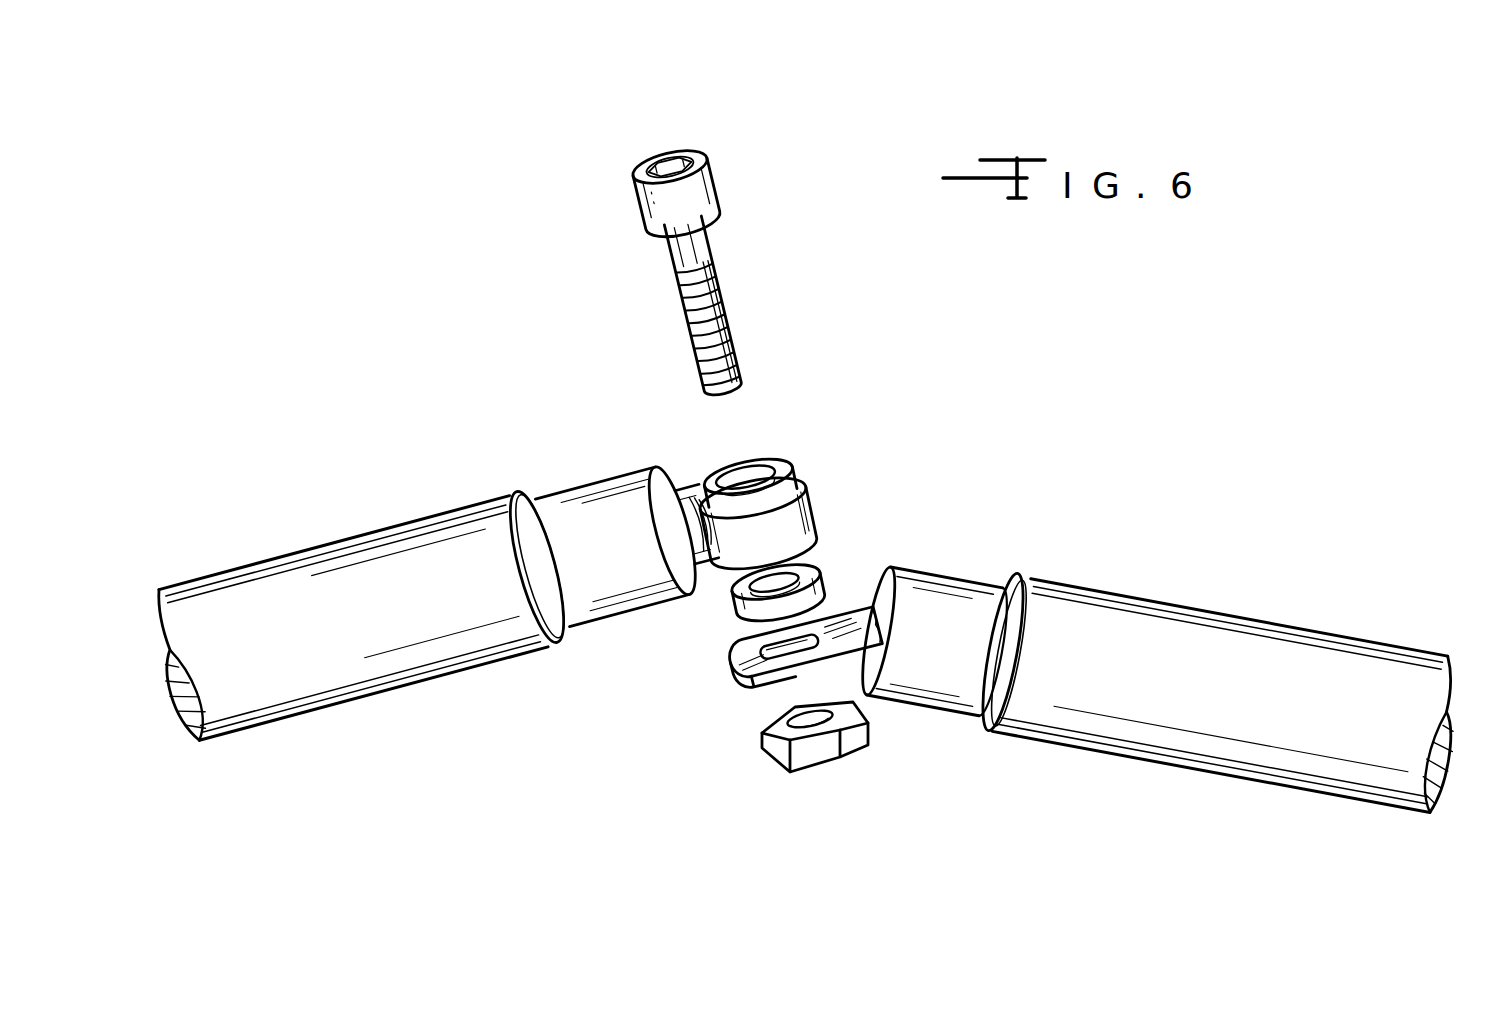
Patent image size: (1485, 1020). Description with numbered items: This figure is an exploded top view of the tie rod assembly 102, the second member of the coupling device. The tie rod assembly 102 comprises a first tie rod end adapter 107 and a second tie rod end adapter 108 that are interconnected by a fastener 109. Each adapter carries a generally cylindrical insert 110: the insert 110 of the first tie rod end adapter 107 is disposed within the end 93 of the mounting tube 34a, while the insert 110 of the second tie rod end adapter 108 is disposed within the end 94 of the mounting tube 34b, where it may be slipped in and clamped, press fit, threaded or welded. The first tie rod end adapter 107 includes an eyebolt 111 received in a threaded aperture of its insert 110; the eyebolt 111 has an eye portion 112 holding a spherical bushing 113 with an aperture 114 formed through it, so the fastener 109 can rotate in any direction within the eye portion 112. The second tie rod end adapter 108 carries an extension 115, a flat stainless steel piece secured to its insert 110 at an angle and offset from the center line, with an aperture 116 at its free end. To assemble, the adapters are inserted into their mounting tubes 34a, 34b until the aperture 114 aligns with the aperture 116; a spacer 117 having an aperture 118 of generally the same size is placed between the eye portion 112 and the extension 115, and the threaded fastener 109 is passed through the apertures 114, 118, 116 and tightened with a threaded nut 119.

The mounting tube 34a is at (278, 560).
The mounting tube 34b is at (1170, 625).
The end 93 is at (573, 643).
The end 94 is at (982, 735).
The tie rod assembly 102 is at (855, 470).
The first tie rod end adapter 107 is at (597, 475).
The second tie rod end adapter 108 is at (967, 582).
The fastener 109 is at (713, 238).
The insert 110 is at (617, 590).
The eyebolt 111 is at (680, 487).
The eye portion 112 is at (815, 485).
The spherical bushing 113 is at (782, 465).
The aperture 114 is at (740, 468).
The extension 115 is at (843, 598).
The aperture 116 is at (727, 653).
The spacer 117 is at (805, 560).
The aperture 118 is at (728, 578).
The threaded nut 119 is at (772, 752).